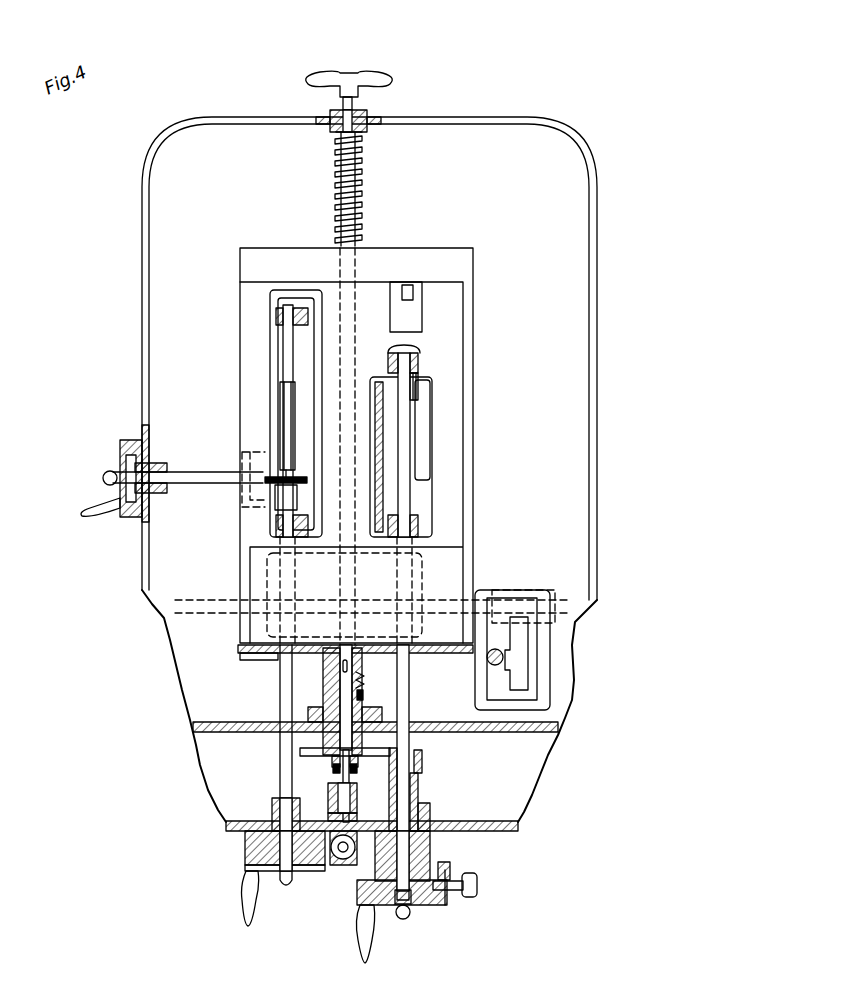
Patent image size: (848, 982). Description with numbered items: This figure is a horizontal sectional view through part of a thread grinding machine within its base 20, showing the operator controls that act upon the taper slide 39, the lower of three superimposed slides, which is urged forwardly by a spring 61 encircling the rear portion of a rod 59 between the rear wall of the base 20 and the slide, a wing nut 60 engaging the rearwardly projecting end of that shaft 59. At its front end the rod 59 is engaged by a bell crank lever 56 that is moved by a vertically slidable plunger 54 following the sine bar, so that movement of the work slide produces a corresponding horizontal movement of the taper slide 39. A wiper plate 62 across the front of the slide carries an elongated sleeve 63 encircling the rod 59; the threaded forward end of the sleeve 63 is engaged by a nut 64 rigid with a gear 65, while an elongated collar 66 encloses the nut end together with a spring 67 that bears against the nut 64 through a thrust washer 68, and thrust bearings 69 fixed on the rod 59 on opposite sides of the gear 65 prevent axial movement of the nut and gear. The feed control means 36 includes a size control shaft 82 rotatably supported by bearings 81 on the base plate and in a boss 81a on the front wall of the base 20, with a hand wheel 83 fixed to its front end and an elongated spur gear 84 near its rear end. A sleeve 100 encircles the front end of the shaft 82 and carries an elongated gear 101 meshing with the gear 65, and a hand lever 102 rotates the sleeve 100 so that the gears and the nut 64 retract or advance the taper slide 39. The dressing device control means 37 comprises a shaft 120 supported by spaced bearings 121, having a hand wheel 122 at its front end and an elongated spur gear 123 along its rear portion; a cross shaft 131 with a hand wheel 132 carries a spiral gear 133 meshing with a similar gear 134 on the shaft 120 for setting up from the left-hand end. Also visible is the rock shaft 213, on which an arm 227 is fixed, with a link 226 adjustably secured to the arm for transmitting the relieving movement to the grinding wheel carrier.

The housing 20 is at (599, 502).
The feed control means 36 is at (452, 902).
The dressing device control means 37 is at (236, 852).
The taper slide 39 is at (461, 250).
The plunger 54 is at (343, 865).
The bell crank lever 56 is at (338, 808).
The rod 59 is at (352, 190).
The wing nut 60 is at (318, 80).
The spring 61 is at (340, 195).
The wiper plate 62 is at (246, 651).
The sleeve 63 is at (356, 668).
The nut 64 is at (322, 746).
The gear 65 is at (332, 762).
The collar 66 is at (330, 665).
The spring 67 is at (361, 680).
The thrust washer 68 is at (363, 694).
The thrust bearings 69 is at (333, 770).
The bearings 81 is at (419, 362).
The boss 81a is at (430, 810).
The shaft 82 is at (406, 498).
The hand wheel 83 is at (414, 905).
The spur gear 84 is at (417, 394).
The sleeve 100 is at (432, 862).
The gear 101 is at (423, 760).
The hand lever 102 is at (476, 890).
The shaft 120 is at (283, 665).
The bearings 121 is at (277, 315).
The hand wheel 122 is at (250, 873).
The spur gear 123 is at (284, 403).
The cross shaft 131 is at (241, 477).
The hand wheel 132 is at (121, 440).
The spiral gear 133 is at (276, 497).
The gear 134 is at (275, 478).
The rock shaft 213 is at (478, 590).
The link 226 is at (489, 663).
The arm 227 is at (528, 657).